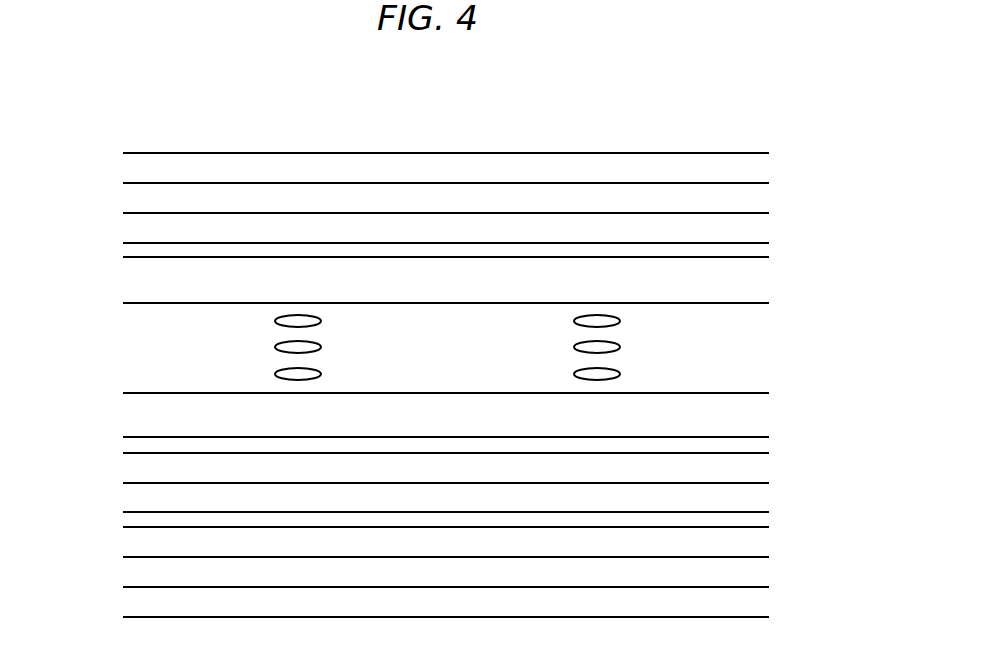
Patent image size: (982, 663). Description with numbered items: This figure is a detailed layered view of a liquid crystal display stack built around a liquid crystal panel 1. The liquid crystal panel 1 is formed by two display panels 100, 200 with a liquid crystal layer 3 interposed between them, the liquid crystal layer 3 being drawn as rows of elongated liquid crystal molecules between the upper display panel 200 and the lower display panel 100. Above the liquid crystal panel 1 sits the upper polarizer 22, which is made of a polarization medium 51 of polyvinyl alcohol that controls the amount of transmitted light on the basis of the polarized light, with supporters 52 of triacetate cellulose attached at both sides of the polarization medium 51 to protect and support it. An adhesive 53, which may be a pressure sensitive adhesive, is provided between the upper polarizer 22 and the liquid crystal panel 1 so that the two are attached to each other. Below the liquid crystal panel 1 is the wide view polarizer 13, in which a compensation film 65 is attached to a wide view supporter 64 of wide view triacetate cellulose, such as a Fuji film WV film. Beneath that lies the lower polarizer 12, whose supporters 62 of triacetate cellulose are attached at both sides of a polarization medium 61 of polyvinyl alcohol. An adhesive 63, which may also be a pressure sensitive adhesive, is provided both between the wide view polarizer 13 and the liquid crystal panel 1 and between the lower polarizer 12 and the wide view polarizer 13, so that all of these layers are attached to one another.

The liquid crystal panel 1 is at (403, 349).
The liquid crystal layer 3 is at (142, 343).
The display panel 100 is at (417, 410).
The display panel 200 is at (142, 281).
The upper polarizer 22 is at (494, 210).
The supporter 52 is at (755, 168).
The polarization medium 51 is at (755, 197).
The adhesive 53 is at (470, 255).
The wide view polarizer 13 is at (494, 477).
The adhesive 63 is at (755, 443).
The compensation film 65 is at (755, 465).
The wide view supporter 64 is at (470, 497).
The lower polarizer 12 is at (494, 566).
The supporter 62 is at (755, 541).
The polarization medium 61 is at (470, 572).